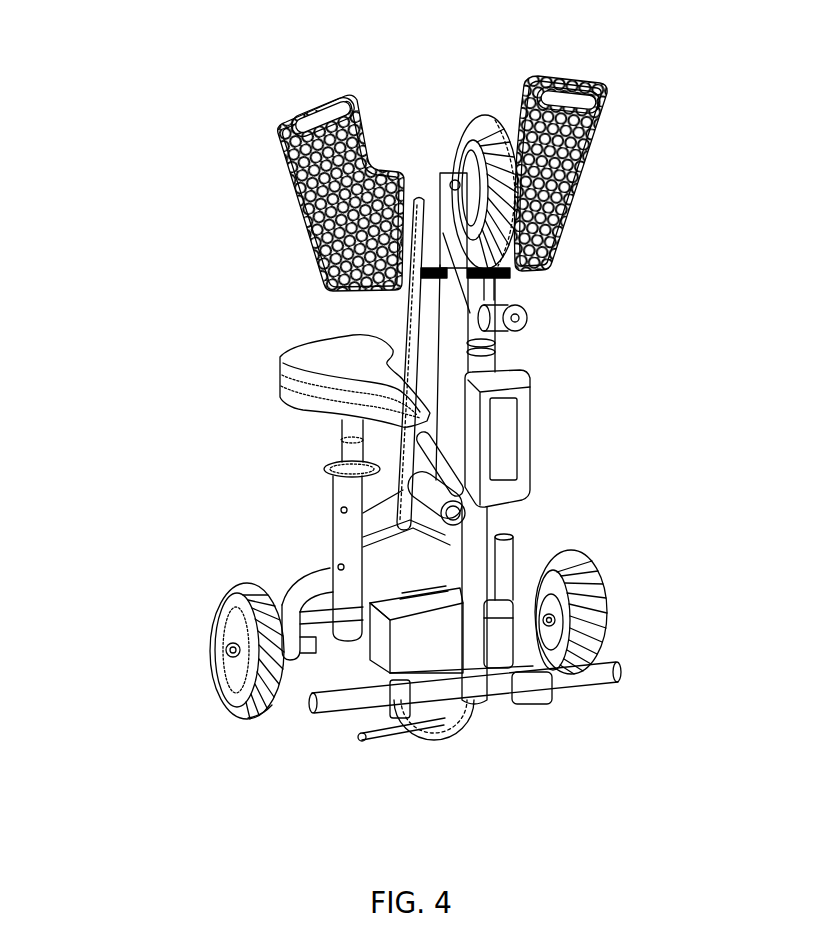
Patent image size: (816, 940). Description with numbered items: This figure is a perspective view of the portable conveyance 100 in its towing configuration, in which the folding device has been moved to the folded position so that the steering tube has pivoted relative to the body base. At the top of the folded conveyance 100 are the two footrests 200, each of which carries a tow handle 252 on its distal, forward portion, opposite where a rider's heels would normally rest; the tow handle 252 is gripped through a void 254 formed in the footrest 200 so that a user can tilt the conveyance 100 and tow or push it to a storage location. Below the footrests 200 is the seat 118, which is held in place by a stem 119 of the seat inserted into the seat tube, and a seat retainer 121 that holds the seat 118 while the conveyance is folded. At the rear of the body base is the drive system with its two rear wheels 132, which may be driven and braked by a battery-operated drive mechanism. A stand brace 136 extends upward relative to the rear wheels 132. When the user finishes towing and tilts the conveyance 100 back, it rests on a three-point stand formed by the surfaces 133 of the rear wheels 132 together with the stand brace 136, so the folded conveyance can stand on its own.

The conveyance 100 is at (164, 111).
The footrest 200 is at (287, 168).
The tow handle 252 is at (325, 101).
The void 254 is at (358, 101).
The seat 118 is at (278, 362).
The stem 119 is at (332, 511).
The seat retainer 121 is at (330, 574).
The rear wheels 132 is at (230, 592).
The surfaces 133 is at (233, 710).
The stand brace 136 is at (445, 737).